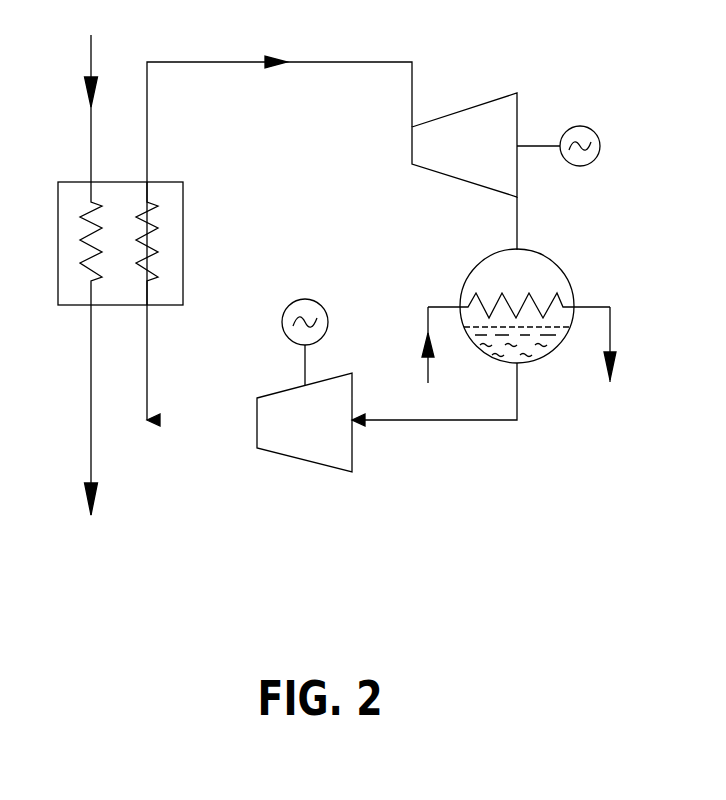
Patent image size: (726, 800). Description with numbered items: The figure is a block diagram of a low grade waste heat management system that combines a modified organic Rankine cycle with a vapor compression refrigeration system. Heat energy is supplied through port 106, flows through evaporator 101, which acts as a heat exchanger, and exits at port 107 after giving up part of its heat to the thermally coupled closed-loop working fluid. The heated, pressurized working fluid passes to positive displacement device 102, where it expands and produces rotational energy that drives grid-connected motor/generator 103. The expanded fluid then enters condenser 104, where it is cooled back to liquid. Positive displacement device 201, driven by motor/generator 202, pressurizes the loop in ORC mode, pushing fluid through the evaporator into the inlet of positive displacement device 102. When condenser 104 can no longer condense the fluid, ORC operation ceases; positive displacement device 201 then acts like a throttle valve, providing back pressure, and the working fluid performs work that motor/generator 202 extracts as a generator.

The evaporator 101 is at (134, 243).
The positive displacement device 102 is at (464, 145).
The motor/generator 103 is at (579, 146).
The condenser 104 is at (519, 316).
The port 106 is at (71, 108).
The port 107 is at (71, 410).
The positive displacement device 201 is at (304, 433).
The motor/generator 202 is at (305, 328).